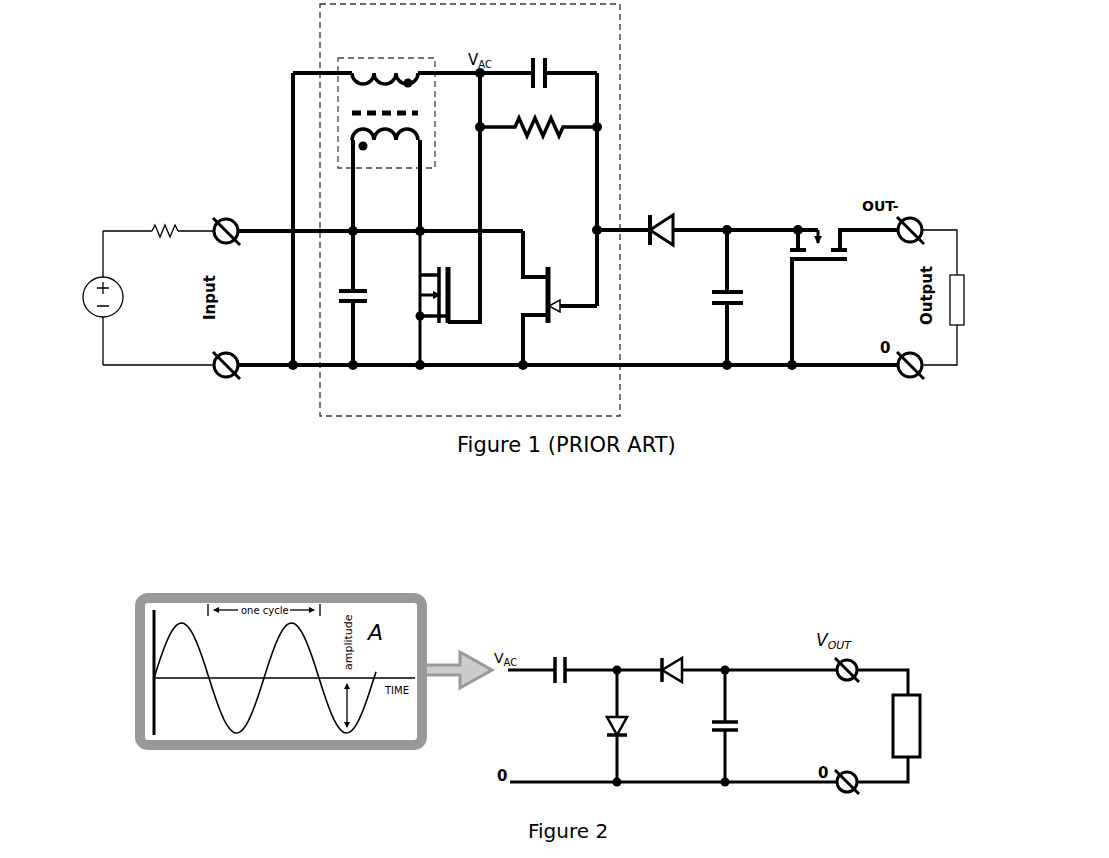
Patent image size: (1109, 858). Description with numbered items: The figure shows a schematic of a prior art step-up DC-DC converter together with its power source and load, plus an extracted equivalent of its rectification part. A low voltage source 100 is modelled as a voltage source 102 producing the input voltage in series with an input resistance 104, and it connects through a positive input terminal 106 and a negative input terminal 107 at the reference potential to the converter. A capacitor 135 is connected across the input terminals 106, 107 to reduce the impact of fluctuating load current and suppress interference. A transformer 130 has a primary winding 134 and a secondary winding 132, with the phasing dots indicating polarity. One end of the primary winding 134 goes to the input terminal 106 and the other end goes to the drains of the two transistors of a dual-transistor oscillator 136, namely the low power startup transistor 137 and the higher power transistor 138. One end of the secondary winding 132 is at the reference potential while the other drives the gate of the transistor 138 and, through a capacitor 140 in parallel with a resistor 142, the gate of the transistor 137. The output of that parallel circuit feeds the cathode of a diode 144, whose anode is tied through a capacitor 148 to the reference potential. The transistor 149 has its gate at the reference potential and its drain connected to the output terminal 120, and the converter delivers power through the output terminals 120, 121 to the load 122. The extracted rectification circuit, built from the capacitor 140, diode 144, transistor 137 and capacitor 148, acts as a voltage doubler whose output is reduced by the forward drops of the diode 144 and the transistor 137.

In FIG. 1, the low voltage source 100 is at (127, 172).
In FIG. 1, the voltage source 102 is at (90, 276).
In FIG. 1, the input resistance 104 is at (165, 228).
In FIG. 1, the positive input terminal 106 is at (228, 218).
In FIG. 1, the negative input terminal 107 is at (228, 378).
In FIG. 1, the positive output terminal 120 is at (915, 218).
In FIG. 2, the positive output terminal 120 is at (853, 660).
In FIG. 1, the negative output terminal 121 is at (900, 378).
In FIG. 2, the negative output terminal 121 is at (845, 793).
In FIG. 1, the load 122 is at (963, 316).
In FIG. 2, the load 122 is at (906, 732).
In FIG. 1, the transformer 130 is at (373, 57).
In FIG. 1, the secondary winding 132 is at (348, 90).
In FIG. 1, the primary winding 134 is at (357, 124).
In FIG. 1, the capacitor C1 135 is at (357, 302).
In FIG. 1, the dual-transistor oscillator 136 is at (618, 43).
In FIG. 1, the low power startup transistor J1 137 is at (551, 292).
In FIG. 2, the low power startup transistor J1 137 is at (610, 736).
In FIG. 1, the higher power transistor M1 138 is at (450, 298).
In FIG. 1, the capacitor C2 140 is at (537, 58).
In FIG. 2, the capacitor C2 140 is at (558, 656).
In FIG. 1, the resistor R1 142 is at (562, 118).
In FIG. 1, the diode D1 144 is at (668, 216).
In FIG. 2, the diode D1 144 is at (668, 661).
In FIG. 1, the capacitor C3 148 is at (713, 292).
In FIG. 2, the capacitor C3 148 is at (740, 724).
In FIG. 1, the transistor M4 149 is at (818, 238).